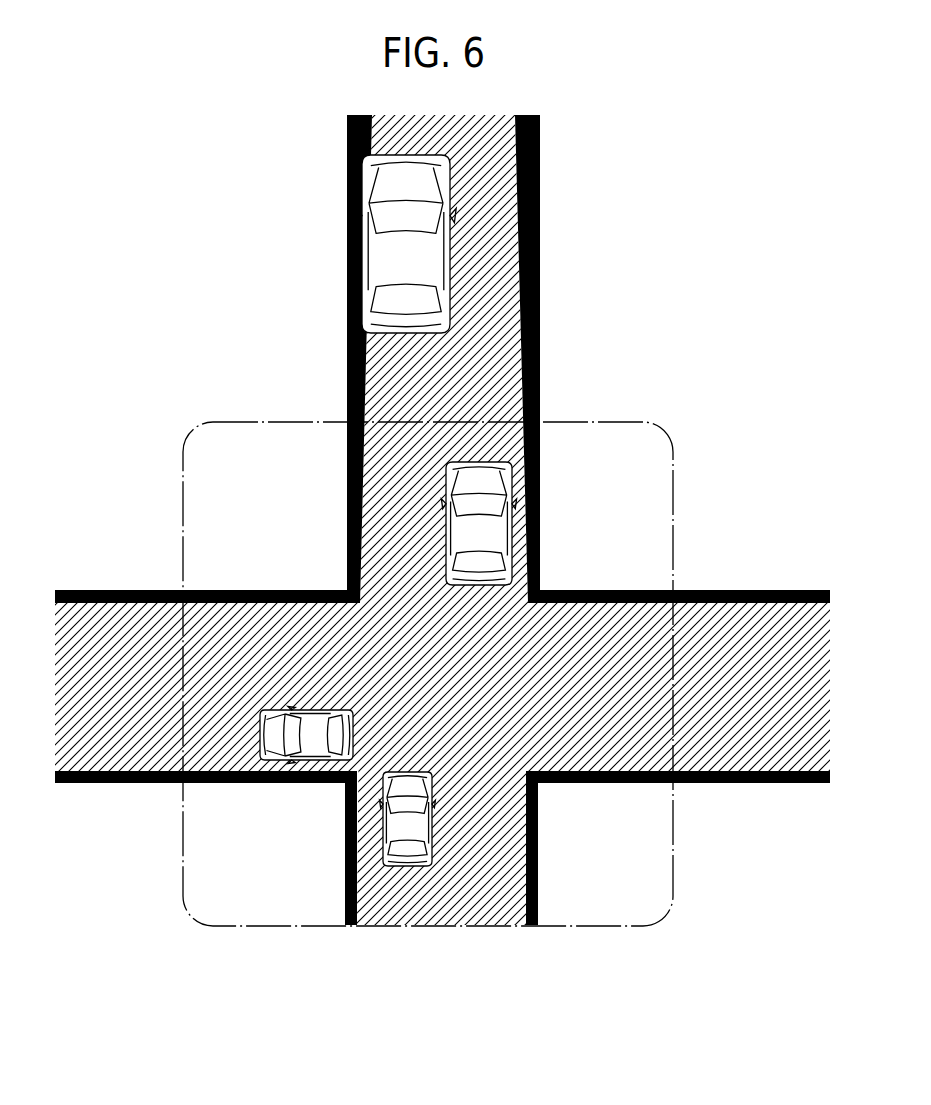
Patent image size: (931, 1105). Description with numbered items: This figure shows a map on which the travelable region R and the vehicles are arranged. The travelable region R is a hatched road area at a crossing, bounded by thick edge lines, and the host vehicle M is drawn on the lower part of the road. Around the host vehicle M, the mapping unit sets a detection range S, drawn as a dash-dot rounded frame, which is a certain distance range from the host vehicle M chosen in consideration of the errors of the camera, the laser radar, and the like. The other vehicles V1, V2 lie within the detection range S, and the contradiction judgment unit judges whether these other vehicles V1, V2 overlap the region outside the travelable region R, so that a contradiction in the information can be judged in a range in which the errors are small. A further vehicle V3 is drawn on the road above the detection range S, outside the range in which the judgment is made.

The travelable region R is at (772, 625).
The detection range S is at (648, 421).
The other vehicle V1 is at (304, 763).
The other vehicle V2 is at (513, 501).
The other vehicle V3 is at (362, 240).
The host vehicle M is at (403, 867).